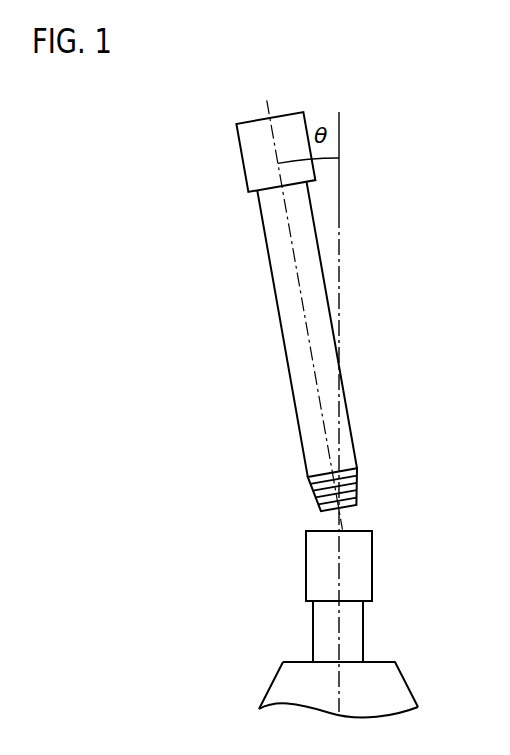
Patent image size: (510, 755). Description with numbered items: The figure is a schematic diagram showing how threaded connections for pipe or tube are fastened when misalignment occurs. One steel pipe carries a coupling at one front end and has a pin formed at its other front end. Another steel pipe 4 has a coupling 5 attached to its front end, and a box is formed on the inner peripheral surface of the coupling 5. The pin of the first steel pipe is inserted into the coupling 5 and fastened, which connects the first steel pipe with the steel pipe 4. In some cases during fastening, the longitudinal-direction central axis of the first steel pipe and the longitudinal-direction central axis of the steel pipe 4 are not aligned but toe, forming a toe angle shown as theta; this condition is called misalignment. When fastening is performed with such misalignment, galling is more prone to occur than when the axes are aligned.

The steel pipe 4 is at (320, 632).
The coupling 5 is at (320, 566).